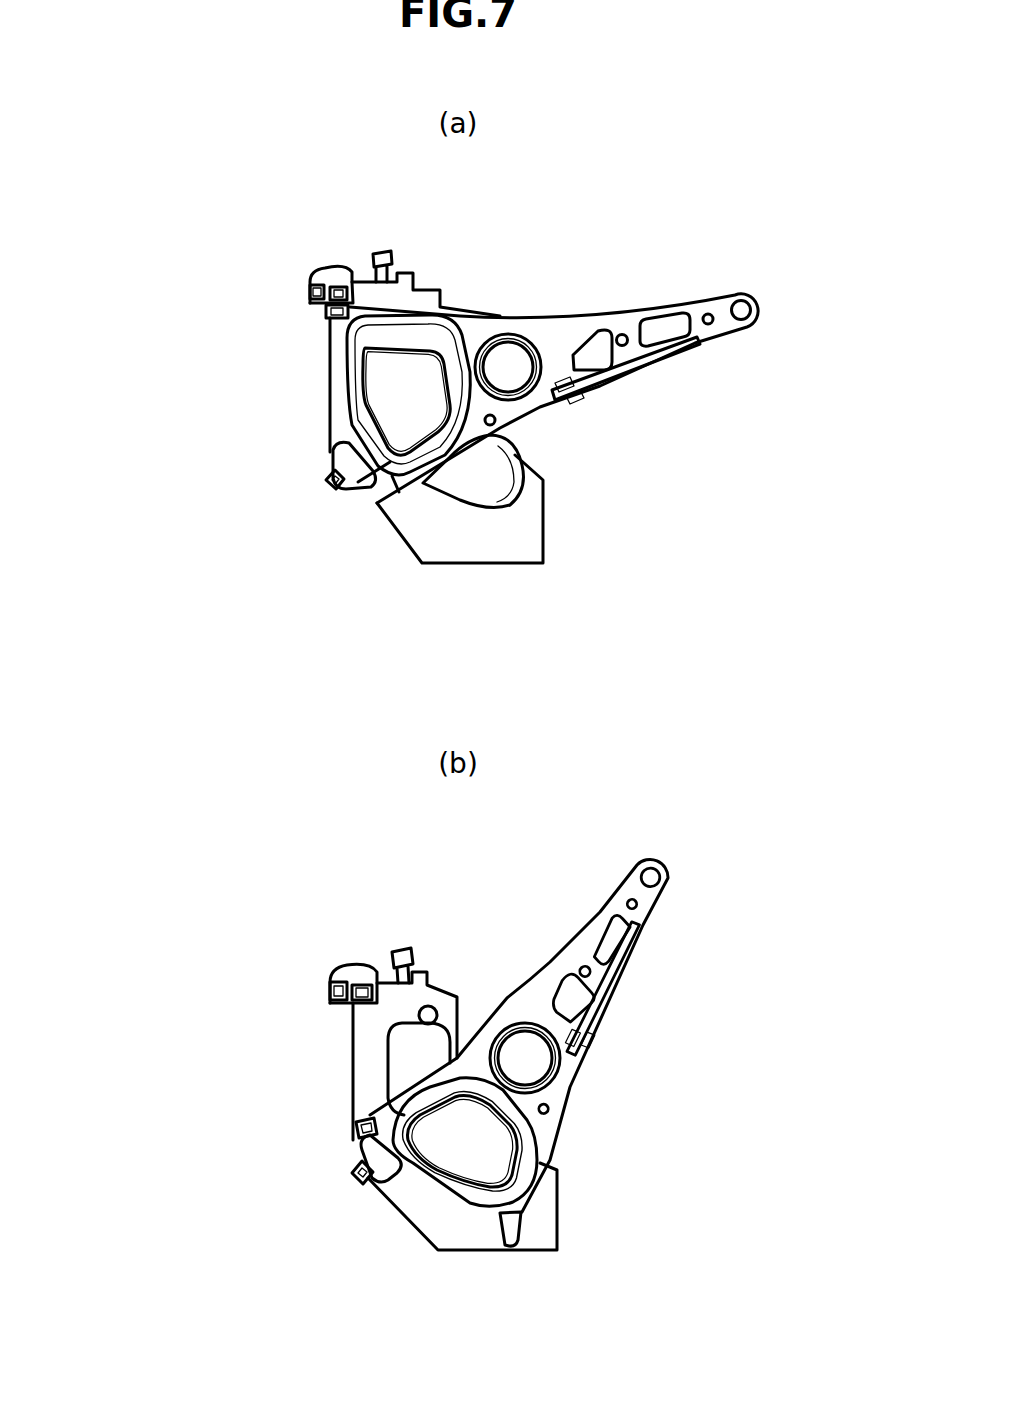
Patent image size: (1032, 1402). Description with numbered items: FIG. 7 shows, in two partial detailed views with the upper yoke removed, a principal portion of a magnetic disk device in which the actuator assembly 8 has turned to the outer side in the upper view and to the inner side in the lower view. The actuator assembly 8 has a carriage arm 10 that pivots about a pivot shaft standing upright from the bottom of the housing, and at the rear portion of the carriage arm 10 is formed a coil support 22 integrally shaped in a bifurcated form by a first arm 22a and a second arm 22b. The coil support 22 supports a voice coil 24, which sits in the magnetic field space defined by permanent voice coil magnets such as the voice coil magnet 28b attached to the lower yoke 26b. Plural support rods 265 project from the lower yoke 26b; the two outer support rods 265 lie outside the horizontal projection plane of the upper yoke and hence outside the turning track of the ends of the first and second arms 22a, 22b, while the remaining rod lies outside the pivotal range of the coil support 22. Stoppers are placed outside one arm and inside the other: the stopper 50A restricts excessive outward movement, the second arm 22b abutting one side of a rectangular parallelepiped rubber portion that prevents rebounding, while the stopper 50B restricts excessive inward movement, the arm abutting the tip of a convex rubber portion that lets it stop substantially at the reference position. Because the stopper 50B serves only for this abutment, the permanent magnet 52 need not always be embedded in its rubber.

The actuator assembly 8 is at (590, 263).
The carriage arm 10 is at (641, 298).
The coil support 22 is at (280, 370).
The first arm 22a is at (368, 492).
The second arm 22b is at (327, 311).
The voice coil 24 is at (358, 410).
The lower yoke 26b is at (438, 560).
The voice coil magnet 28b is at (518, 474).
The stopper 50A is at (305, 262).
The stopper 50B is at (310, 465).
The permanent magnet 52 is at (338, 290).
The support rods 265 is at (311, 293).